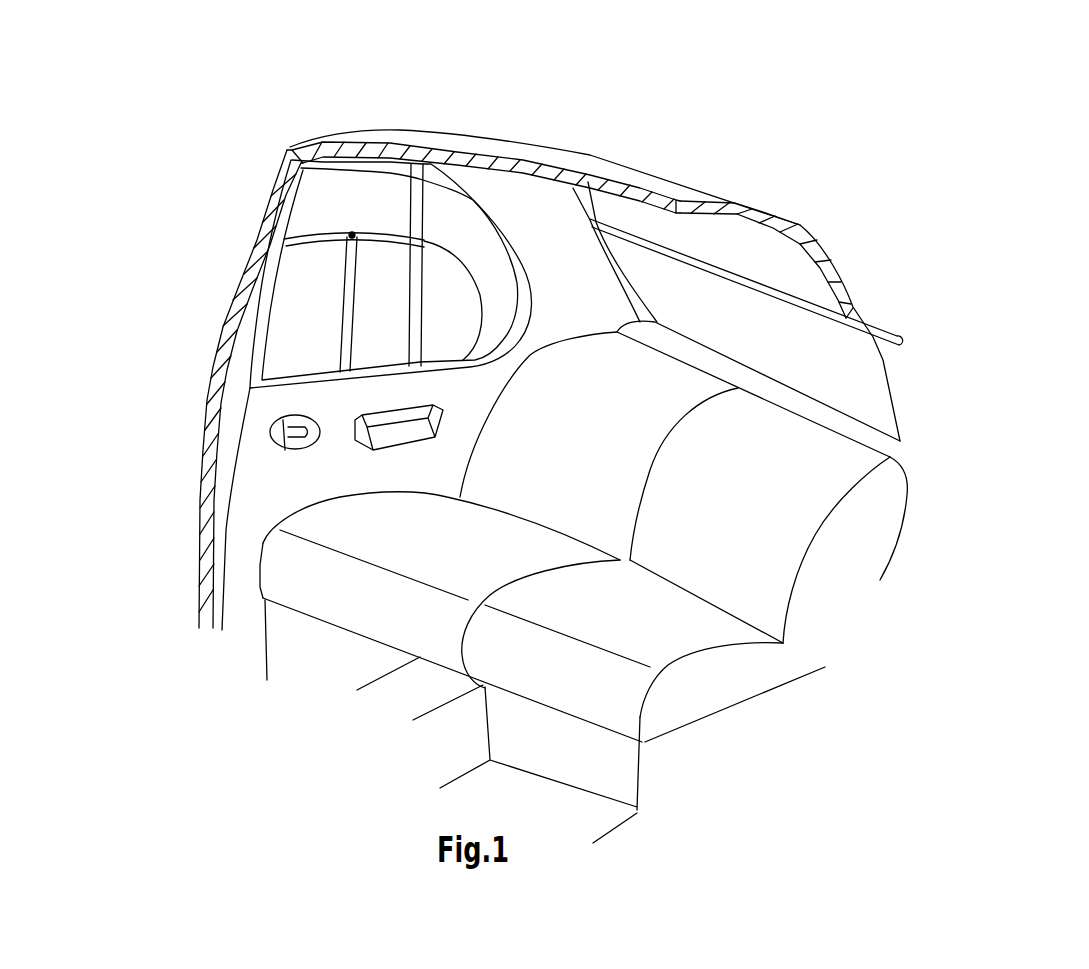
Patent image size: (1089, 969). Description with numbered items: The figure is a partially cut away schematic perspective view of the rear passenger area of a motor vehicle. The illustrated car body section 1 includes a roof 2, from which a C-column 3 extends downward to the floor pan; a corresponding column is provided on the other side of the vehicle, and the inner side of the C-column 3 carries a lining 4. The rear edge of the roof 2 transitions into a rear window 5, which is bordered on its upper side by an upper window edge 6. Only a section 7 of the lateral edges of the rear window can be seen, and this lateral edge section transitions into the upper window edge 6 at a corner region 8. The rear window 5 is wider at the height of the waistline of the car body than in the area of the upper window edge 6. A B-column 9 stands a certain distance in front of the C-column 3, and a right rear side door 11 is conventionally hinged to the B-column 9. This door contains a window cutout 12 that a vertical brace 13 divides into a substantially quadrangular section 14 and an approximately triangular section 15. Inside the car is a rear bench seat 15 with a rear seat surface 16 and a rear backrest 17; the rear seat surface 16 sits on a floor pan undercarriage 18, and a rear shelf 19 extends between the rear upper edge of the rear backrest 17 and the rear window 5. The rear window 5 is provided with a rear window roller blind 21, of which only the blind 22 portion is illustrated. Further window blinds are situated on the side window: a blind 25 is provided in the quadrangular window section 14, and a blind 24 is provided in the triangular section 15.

The car body section 1 is at (796, 164).
The roof 2 is at (485, 133).
The C-column 3 is at (546, 234).
The lining 4 is at (592, 289).
The rear window 5 is at (793, 268).
The upper window edge 6 is at (790, 227).
The section of the lateral edge of the rear window 7 is at (635, 282).
The corner region 8 is at (600, 199).
The B-column 9 is at (223, 307).
The right rear side door 11 is at (280, 488).
The window cutout 12 is at (287, 150).
The vertical brace 13 is at (425, 215).
The quadrangular section 14 is at (322, 193).
The triangular section / rear bench seat 15 is at (492, 272).
The rear seat surface 16 is at (708, 673).
The rear backrest 17 is at (870, 497).
The floor pan undercarriage 18 is at (640, 775).
The rear shelf 19 is at (887, 440).
The rear window roller blind 21 is at (922, 323).
The blind 22 is at (748, 343).
The blind 24 is at (444, 322).
The blind 25 is at (308, 278).